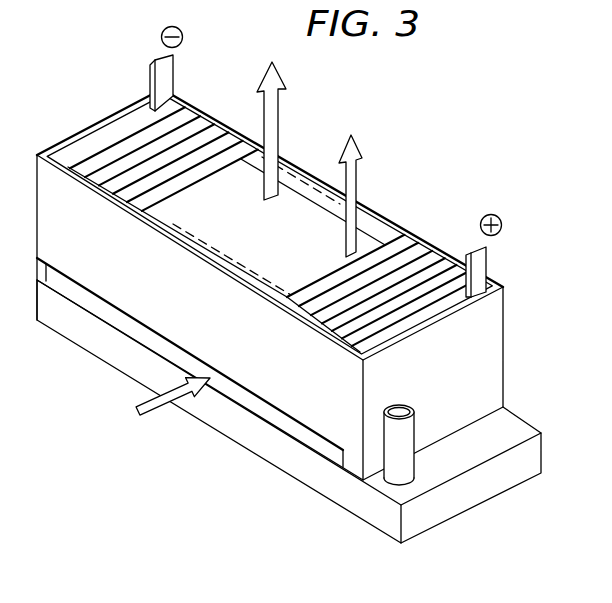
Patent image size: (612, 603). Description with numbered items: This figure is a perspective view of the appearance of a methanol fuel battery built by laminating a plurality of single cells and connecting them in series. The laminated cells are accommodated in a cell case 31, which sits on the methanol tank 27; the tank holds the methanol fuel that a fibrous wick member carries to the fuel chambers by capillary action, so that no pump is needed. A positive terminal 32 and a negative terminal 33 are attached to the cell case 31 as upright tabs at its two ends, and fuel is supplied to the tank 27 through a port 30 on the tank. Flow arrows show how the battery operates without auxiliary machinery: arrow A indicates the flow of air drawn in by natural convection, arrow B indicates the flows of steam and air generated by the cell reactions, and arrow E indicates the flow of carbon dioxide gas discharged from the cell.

The methanol tank 27 is at (474, 498).
The port 30 is at (408, 430).
The cell case 31 is at (497, 319).
The positive terminal 32 is at (487, 262).
The negative terminal 33 is at (151, 65).
The arrow A is at (157, 414).
The arrow B is at (357, 167).
The arrow E is at (278, 90).